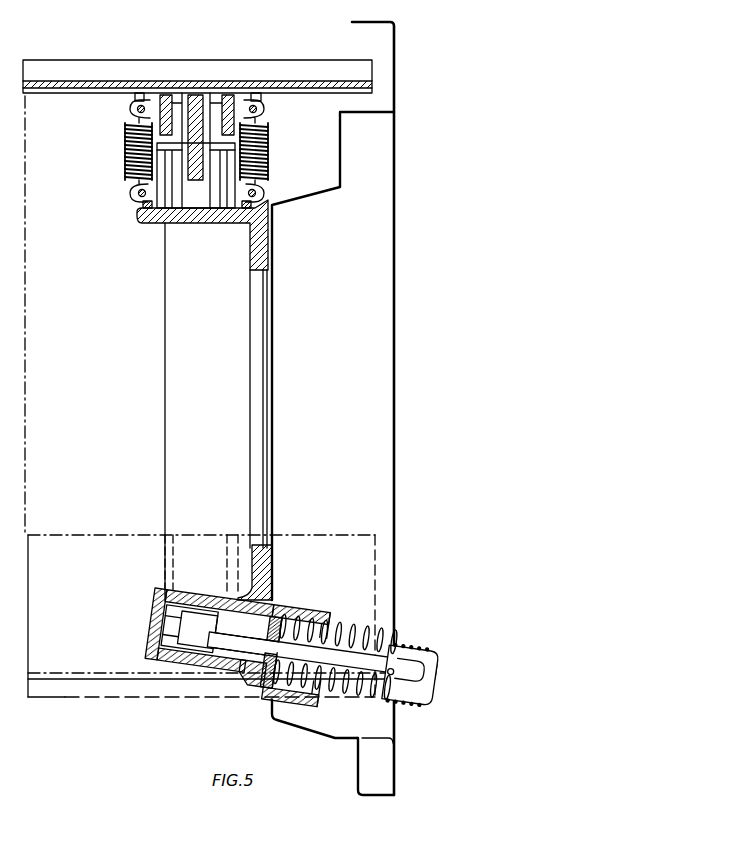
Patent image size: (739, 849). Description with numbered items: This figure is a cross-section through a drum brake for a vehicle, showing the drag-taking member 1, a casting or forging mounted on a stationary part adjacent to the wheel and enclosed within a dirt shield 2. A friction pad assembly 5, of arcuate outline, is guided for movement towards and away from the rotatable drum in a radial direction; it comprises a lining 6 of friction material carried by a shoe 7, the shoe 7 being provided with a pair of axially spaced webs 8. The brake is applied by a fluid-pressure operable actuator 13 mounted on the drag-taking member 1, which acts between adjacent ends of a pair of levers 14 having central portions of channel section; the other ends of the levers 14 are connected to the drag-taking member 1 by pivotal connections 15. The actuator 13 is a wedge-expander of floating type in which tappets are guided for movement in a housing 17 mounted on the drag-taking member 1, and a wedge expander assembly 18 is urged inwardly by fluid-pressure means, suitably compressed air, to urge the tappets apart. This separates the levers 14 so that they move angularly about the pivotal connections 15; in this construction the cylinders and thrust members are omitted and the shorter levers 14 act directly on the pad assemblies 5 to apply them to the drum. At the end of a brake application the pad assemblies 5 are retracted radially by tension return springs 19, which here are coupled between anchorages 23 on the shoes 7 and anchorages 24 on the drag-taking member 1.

The drag-taking member 1 is at (262, 247).
The dirt shield 2 is at (395, 42).
The friction pad assembly 5 is at (279, 68).
The lining 6 is at (124, 70).
The shoe 7 is at (83, 86).
The web 8 is at (163, 94).
The fluid-pressure operable actuator 13 is at (322, 609).
The lever 14 is at (198, 112).
The pivotal connection 15 is at (126, 180).
The housing 17 is at (264, 622).
The wedge expander assembly 18 is at (215, 642).
The tension return spring 19 is at (128, 148).
The anchorage 23 is at (135, 98).
The anchorage 24 is at (140, 203).